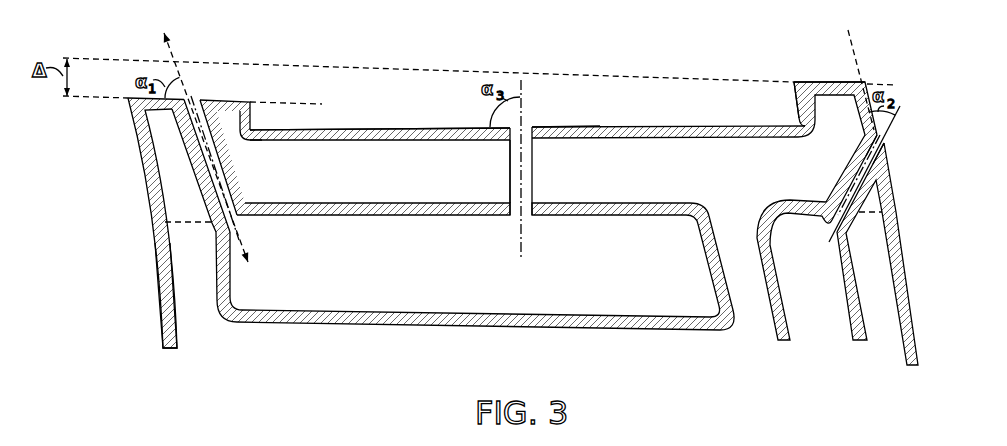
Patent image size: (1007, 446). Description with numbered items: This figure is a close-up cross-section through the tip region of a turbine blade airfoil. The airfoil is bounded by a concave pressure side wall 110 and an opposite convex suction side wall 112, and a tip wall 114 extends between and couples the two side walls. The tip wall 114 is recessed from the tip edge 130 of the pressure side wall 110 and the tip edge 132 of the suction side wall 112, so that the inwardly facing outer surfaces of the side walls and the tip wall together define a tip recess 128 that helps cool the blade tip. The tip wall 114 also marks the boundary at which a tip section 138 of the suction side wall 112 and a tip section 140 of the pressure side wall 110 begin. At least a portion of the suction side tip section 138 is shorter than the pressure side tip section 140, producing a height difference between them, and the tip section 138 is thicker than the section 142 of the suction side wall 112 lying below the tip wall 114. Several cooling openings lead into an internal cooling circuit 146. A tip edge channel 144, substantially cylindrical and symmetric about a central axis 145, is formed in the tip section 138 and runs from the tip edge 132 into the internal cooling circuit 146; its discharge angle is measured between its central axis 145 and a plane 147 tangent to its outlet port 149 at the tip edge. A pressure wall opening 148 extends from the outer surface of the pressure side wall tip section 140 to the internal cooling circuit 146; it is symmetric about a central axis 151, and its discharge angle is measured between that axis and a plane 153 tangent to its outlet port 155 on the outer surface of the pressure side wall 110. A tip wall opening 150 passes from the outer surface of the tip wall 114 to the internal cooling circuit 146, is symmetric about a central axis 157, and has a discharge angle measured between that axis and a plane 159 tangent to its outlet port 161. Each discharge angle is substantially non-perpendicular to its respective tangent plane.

The pressure side wall 110 is at (830, 166).
The suction side wall 112 is at (240, 132).
The tip wall 114 is at (624, 152).
The tip recess 128 is at (418, 98).
The tip edge 130 is at (825, 81).
The tip edge 132 is at (228, 100).
The tip section 138 is at (160, 193).
The tip section 140 is at (885, 200).
The section 142 is at (176, 290).
The tip edge channel 144 is at (189, 99).
The central axis 145 is at (167, 40).
The internal cooling circuit 146 is at (488, 270).
The plane 147 is at (302, 102).
The pressure wall opening 148 is at (847, 197).
The outlet port 149 is at (198, 98).
The tip wall opening 150 is at (528, 158).
The central axis 151 is at (897, 104).
The plane 153 is at (853, 42).
The outlet port 155 is at (881, 143).
The central axis 157 is at (514, 183).
The plane 159 is at (441, 127).
The outlet port 161 is at (531, 126).